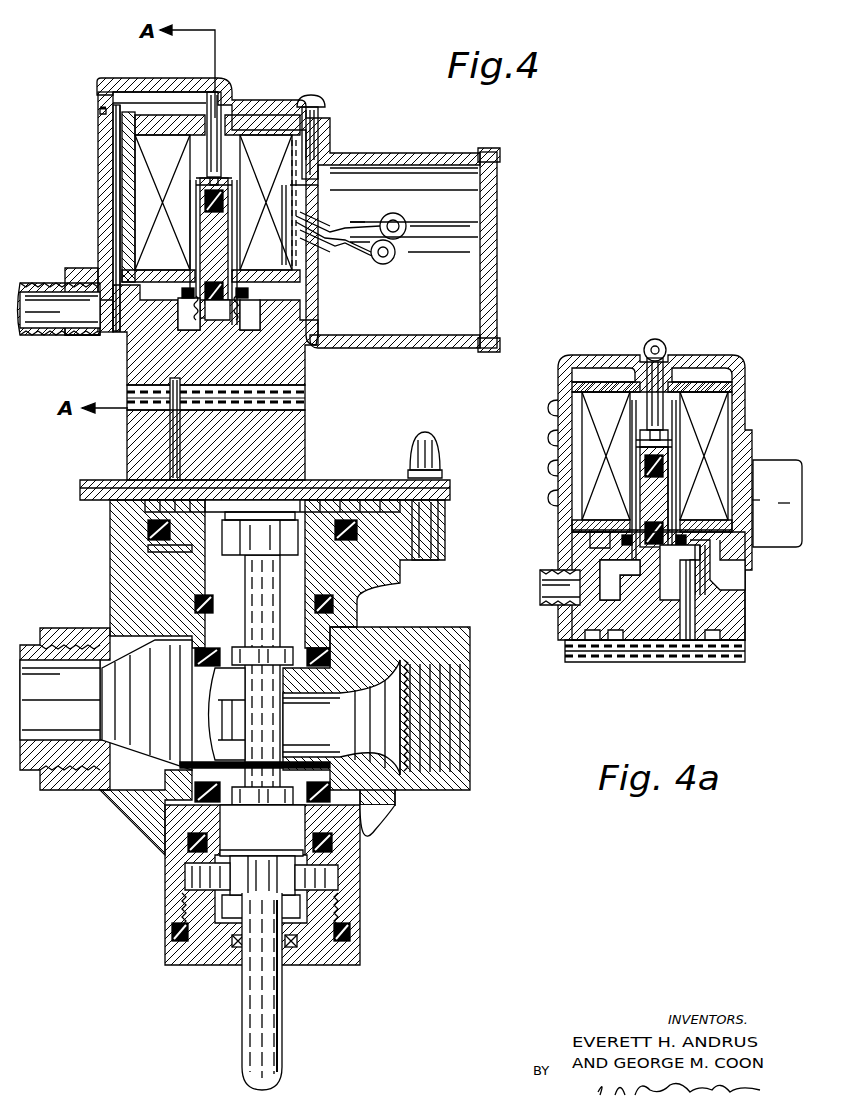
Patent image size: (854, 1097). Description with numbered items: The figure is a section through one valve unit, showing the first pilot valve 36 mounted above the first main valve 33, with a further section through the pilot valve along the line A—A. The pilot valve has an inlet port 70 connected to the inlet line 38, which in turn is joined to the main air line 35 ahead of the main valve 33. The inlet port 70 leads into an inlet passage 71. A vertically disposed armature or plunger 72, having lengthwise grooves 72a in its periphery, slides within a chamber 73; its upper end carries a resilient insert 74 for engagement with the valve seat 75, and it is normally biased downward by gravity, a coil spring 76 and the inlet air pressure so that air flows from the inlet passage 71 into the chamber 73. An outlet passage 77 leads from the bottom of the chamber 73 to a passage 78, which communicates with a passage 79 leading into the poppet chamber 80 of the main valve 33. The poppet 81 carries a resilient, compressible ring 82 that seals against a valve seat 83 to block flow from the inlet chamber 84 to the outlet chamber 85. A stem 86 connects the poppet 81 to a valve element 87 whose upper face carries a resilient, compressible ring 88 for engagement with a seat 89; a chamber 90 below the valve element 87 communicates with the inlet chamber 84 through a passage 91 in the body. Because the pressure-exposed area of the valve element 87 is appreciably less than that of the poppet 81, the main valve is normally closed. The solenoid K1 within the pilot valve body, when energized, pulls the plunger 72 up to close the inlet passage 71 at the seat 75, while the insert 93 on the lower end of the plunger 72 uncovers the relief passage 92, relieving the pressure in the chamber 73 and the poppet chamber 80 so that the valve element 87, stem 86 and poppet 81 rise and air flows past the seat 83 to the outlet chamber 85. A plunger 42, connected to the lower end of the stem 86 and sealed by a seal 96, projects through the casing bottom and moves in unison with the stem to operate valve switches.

In FIG. 4, the first main valve 33 is at (110, 575).
In FIG. 4, the main air line 35 is at (18, 682).
In FIG. 4, the first pilot valve 36 is at (258, 98).
In FIG. 4A, the first pilot valve 36 is at (575, 352).
In FIG. 4, the inlet line 38 is at (59, 328).
In FIG. 4, the plunger 42 is at (282, 1036).
In FIG. 4, the inlet port 70 is at (78, 268).
In FIG. 4, the inlet passage 71 is at (113, 140).
In FIG. 4A, the inlet passage 71 is at (658, 350).
In FIG. 4, the plunger 72 is at (250, 160).
In FIG. 4A, the plunger 72 is at (672, 462).
In FIG. 4, the lengthwise grooves 72a is at (286, 185).
In FIG. 4A, the lengthwise grooves 72a is at (672, 478).
In FIG. 4, the chamber 73 is at (290, 216).
In FIG. 4A, the chamber 73 is at (672, 492).
In FIG. 4, the resilient insert 74 is at (306, 98).
In FIG. 4A, the resilient insert 74 is at (638, 442).
In FIG. 4, the valve seat 75 is at (192, 175).
In FIG. 4A, the valve seat 75 is at (665, 450).
In FIG. 4, the coil spring 76 is at (250, 296).
In FIG. 4A, the coil spring 76 is at (578, 548).
In FIG. 4A, the outlet passage 77 is at (700, 566).
In FIG. 4A, the passage 78 is at (692, 620).
In FIG. 4, the passage 79 is at (178, 388).
In FIG. 4A, the passage 79 is at (690, 660).
In FIG. 4, the poppet chamber 80 is at (315, 492).
In FIG. 4, the poppet 81 is at (345, 520).
In FIG. 4, the resilient, compressible ring 82 is at (335, 645).
In FIG. 4, the valve seat 83 is at (300, 764).
In FIG. 4, the inlet chamber 84 is at (150, 762).
In FIG. 4, the outlet chamber 85 is at (395, 808).
In FIG. 4, the stem 86 is at (196, 838).
In FIG. 4, the valve element 87 is at (210, 825).
In FIG. 4, the resilient, compressible ring 88 is at (362, 835).
In FIG. 4, the seat 89 is at (328, 790).
In FIG. 4, the chamber 90 is at (318, 878).
In FIG. 4, the passage 91 is at (190, 800).
In FIG. 4A, the relief passage 92 is at (590, 665).
In FIG. 4, the insert 93 is at (248, 318).
In FIG. 4A, the insert 93 is at (615, 665).
In FIG. 4, the seal 96 is at (236, 950).
In FIG. 4, the solenoid K1 is at (160, 190).
In FIG. 4A, the solenoid K1 is at (705, 408).